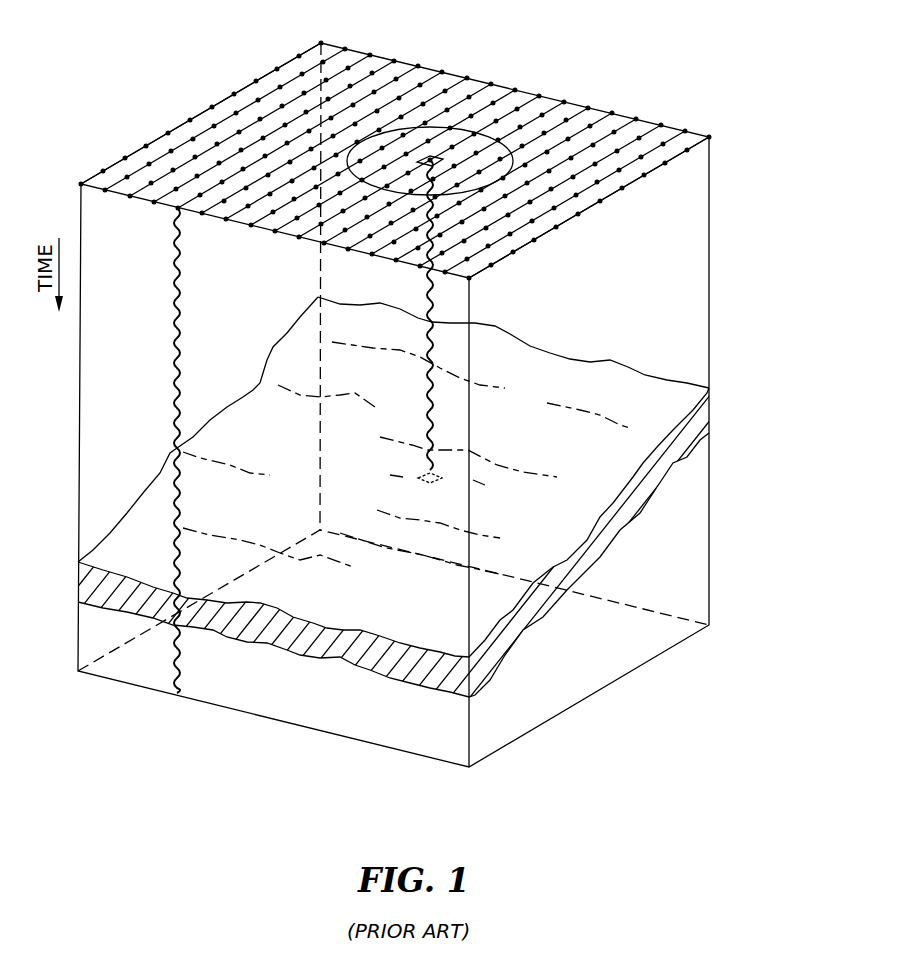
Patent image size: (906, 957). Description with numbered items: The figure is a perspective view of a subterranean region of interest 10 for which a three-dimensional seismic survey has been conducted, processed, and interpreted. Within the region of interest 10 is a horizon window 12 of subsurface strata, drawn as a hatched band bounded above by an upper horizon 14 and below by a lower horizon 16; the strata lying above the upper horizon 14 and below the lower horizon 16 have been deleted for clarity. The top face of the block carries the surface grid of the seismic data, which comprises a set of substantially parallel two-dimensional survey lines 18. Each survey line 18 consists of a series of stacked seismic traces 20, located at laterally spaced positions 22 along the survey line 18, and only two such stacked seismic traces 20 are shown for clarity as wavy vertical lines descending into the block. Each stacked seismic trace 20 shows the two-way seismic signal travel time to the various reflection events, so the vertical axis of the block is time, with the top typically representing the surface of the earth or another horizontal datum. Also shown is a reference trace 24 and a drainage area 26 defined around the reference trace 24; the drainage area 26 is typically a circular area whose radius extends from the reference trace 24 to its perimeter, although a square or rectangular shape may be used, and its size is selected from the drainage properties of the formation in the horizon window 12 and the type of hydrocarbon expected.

The subterranean region of interest 10 is at (718, 212).
The horizon window 12 is at (700, 418).
The upper horizon 14 is at (700, 390).
The lower horizon 16 is at (693, 447).
The survey lines 18 is at (242, 128).
The stacked seismic traces 20 is at (172, 307).
The laterally spaced positions 22 is at (299, 57).
The reference trace 24 is at (433, 155).
The drainage area 26 is at (507, 127).